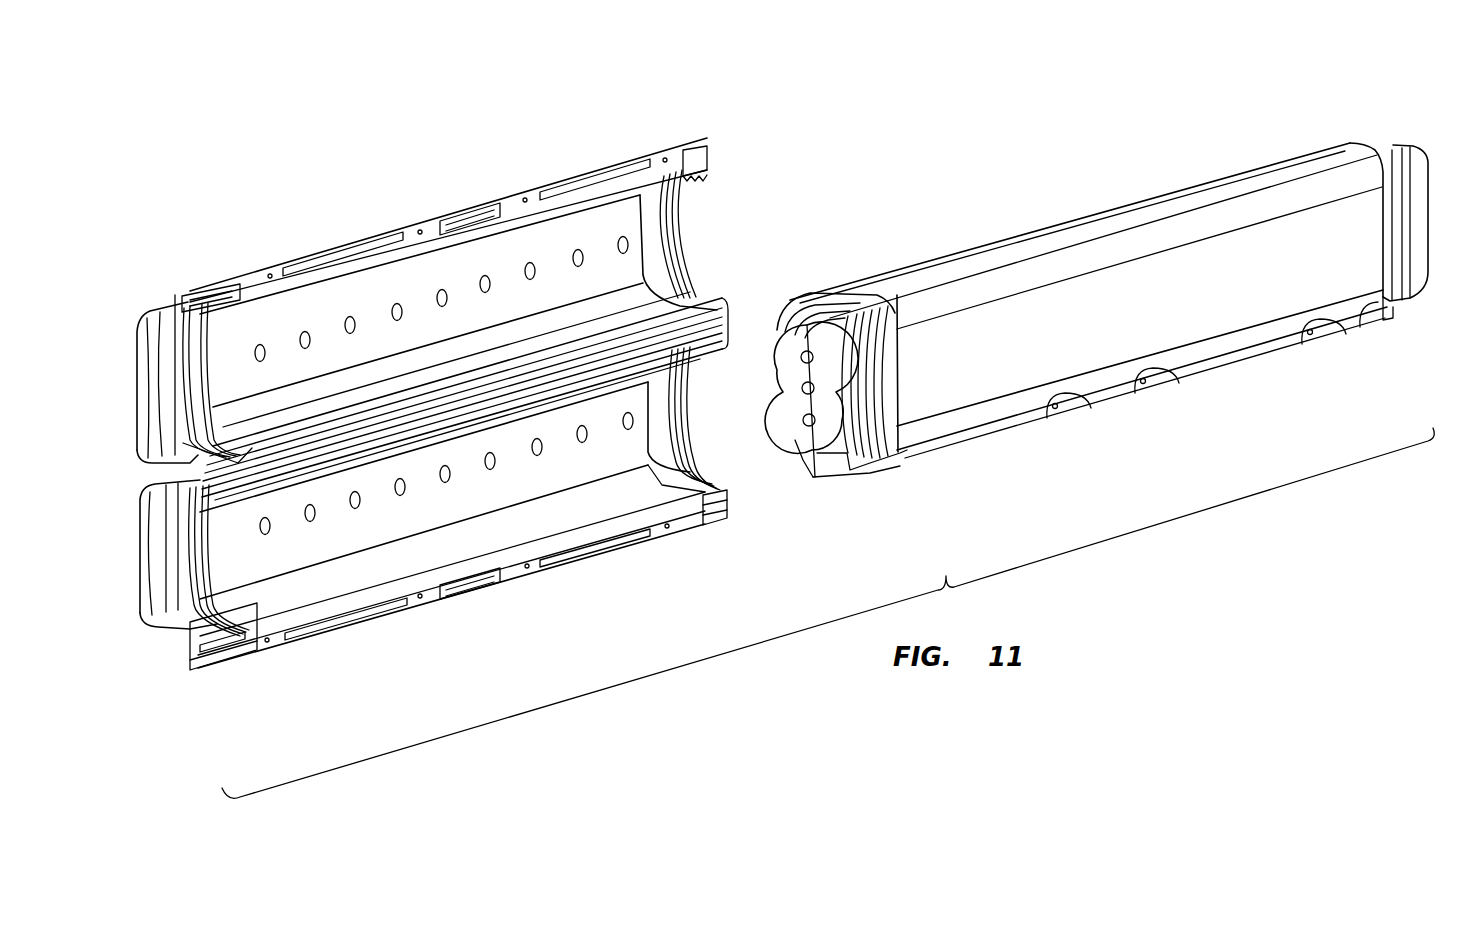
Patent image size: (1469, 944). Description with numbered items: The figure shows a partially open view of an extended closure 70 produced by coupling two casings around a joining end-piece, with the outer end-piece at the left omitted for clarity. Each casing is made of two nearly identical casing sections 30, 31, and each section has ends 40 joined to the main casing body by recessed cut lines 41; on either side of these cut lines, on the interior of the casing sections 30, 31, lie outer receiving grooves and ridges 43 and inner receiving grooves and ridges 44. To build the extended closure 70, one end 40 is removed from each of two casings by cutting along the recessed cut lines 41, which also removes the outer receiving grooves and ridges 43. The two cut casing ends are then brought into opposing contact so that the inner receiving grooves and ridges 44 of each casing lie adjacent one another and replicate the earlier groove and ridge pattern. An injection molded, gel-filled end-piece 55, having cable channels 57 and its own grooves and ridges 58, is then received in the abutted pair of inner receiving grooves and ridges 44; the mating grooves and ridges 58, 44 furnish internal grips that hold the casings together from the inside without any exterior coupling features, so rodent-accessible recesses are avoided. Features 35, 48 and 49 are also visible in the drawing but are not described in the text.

The extended closure 70 is at (482, 114).
The casing section 30 is at (683, 528).
The casing section 31 is at (686, 221).
The mating rails 35 is at (723, 313).
The end 40 is at (1372, 163).
The recessed cut line 41 is at (703, 136).
The outer receiving grooves and ridges 43 is at (177, 297).
The inner receiving grooves and ridges 44 is at (230, 290).
The flange with slots 48 is at (592, 188).
The locating bumps 49 is at (1142, 396).
The end-piece 55 is at (812, 452).
The channel 57 is at (793, 388).
The grooves and ridges 58 is at (890, 340).